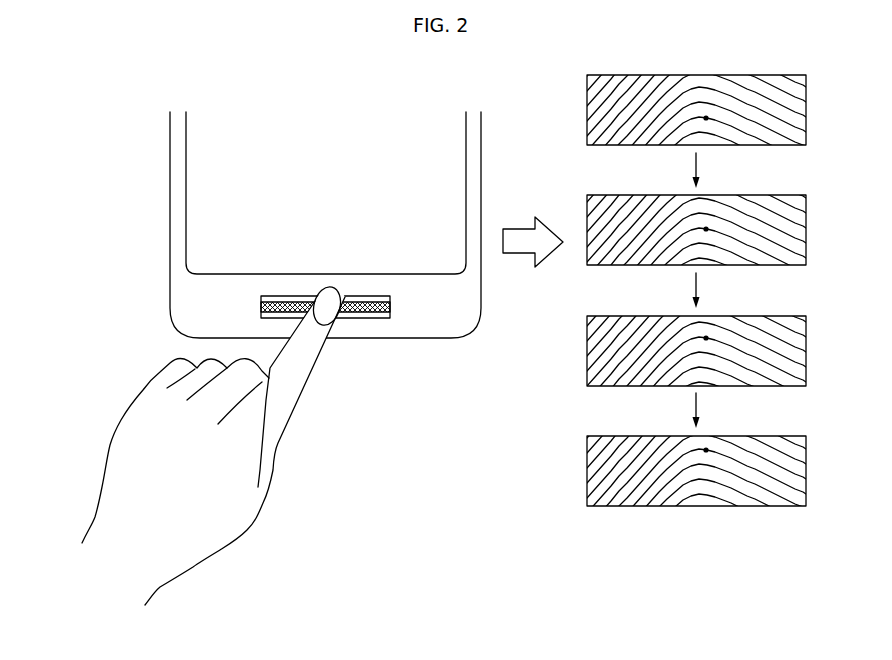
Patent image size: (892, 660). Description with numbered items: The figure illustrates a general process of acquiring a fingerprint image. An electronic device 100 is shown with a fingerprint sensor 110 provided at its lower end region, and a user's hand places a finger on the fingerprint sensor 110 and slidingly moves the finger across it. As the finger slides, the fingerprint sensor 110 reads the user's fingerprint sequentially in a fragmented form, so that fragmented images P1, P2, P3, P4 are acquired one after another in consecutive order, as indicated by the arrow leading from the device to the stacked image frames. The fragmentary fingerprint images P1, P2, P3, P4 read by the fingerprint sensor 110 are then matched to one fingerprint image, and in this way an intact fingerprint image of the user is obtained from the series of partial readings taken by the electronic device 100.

The electronic device 100 is at (156, 207).
The fingerprint sensor 110 is at (374, 313).
The fragmented image P1 is at (716, 143).
The fragmented image P2 is at (716, 237).
The fragmented image P3 is at (716, 346).
The fragmented image P4 is at (716, 458).